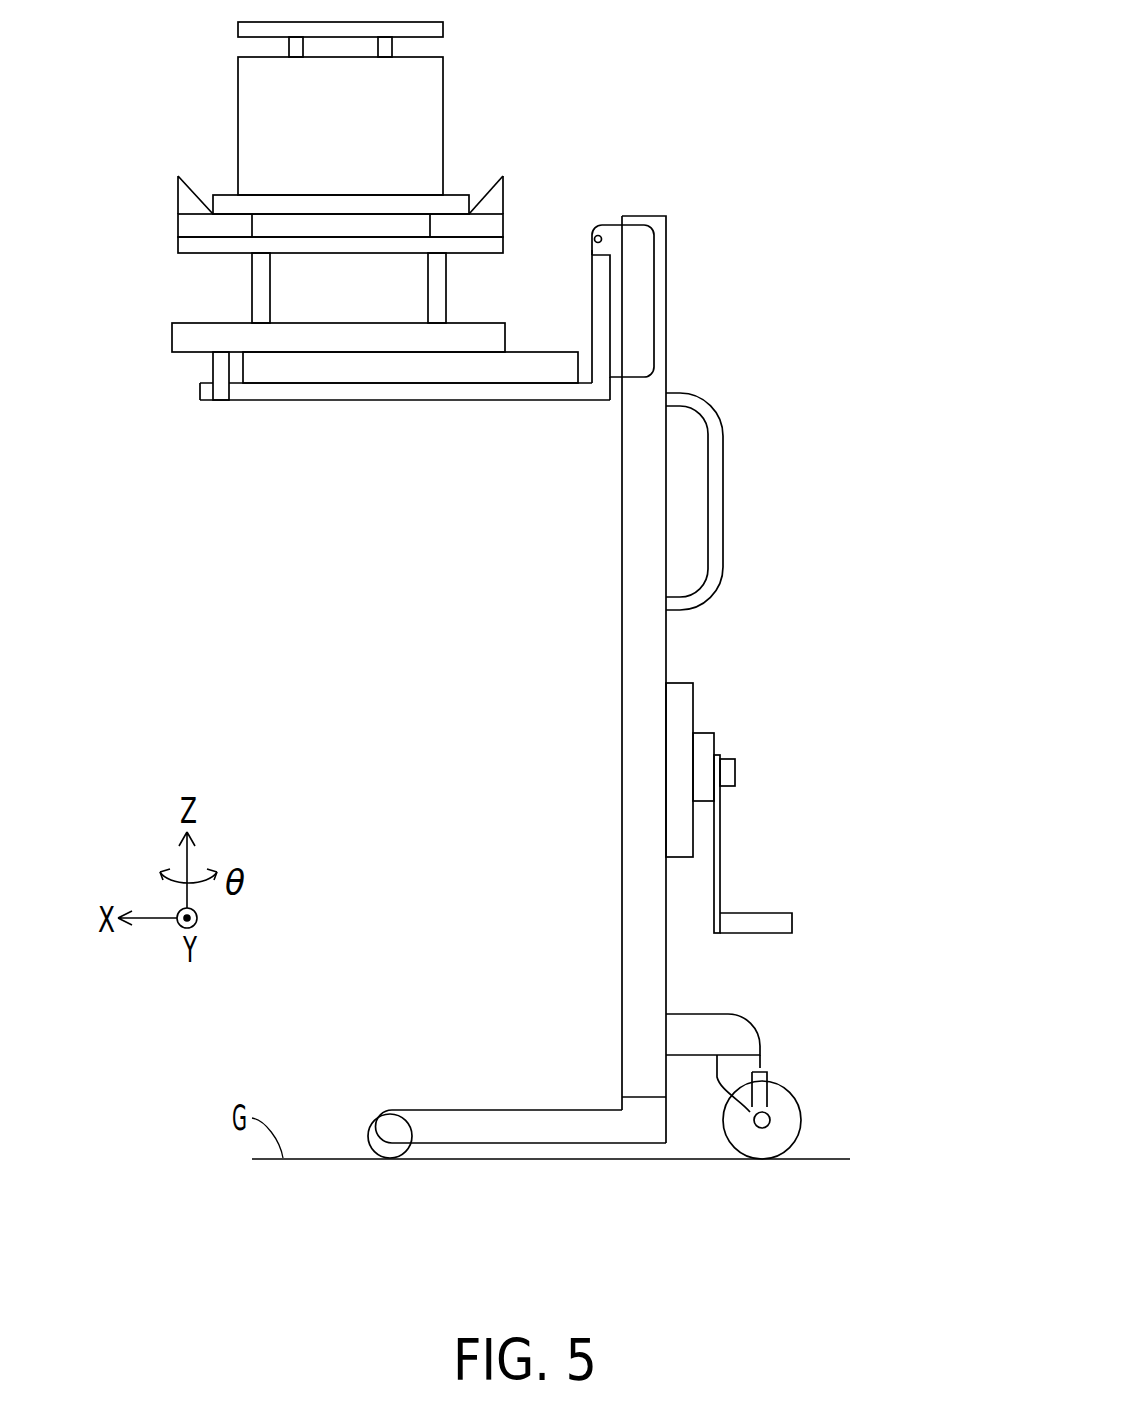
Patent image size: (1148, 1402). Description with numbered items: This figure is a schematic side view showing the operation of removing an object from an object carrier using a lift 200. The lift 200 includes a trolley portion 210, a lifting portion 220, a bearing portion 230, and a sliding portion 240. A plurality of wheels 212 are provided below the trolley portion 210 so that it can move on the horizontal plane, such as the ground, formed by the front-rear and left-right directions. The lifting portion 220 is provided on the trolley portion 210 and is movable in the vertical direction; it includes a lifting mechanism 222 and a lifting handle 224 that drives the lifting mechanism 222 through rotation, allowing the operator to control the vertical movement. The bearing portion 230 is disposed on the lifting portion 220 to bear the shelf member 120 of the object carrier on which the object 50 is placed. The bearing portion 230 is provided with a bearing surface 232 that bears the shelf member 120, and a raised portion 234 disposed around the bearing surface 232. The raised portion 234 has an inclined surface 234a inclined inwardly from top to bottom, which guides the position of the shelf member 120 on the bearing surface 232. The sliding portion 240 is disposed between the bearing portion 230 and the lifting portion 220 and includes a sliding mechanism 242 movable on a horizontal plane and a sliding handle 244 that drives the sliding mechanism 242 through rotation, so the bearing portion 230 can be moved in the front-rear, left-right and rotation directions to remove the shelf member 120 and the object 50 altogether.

The object 50 is at (255, 88).
The shelf member 120 is at (230, 205).
The lift 200 is at (497, 662).
The trolley portion 210 is at (653, 983).
The wheels 212 is at (390, 1150).
The lifting portion 220 is at (777, 679).
The lifting mechanism 222 is at (652, 650).
The lifting handle 224 is at (720, 858).
The bearing portion 230 is at (421, 172).
The bearing surface 232 is at (497, 245).
The raised portion 234 is at (403, 142).
The inclined surface 234a is at (489, 192).
The sliding portion 240 is at (413, 402).
The sliding mechanism 242 is at (323, 352).
The sliding handle 244 is at (214, 412).